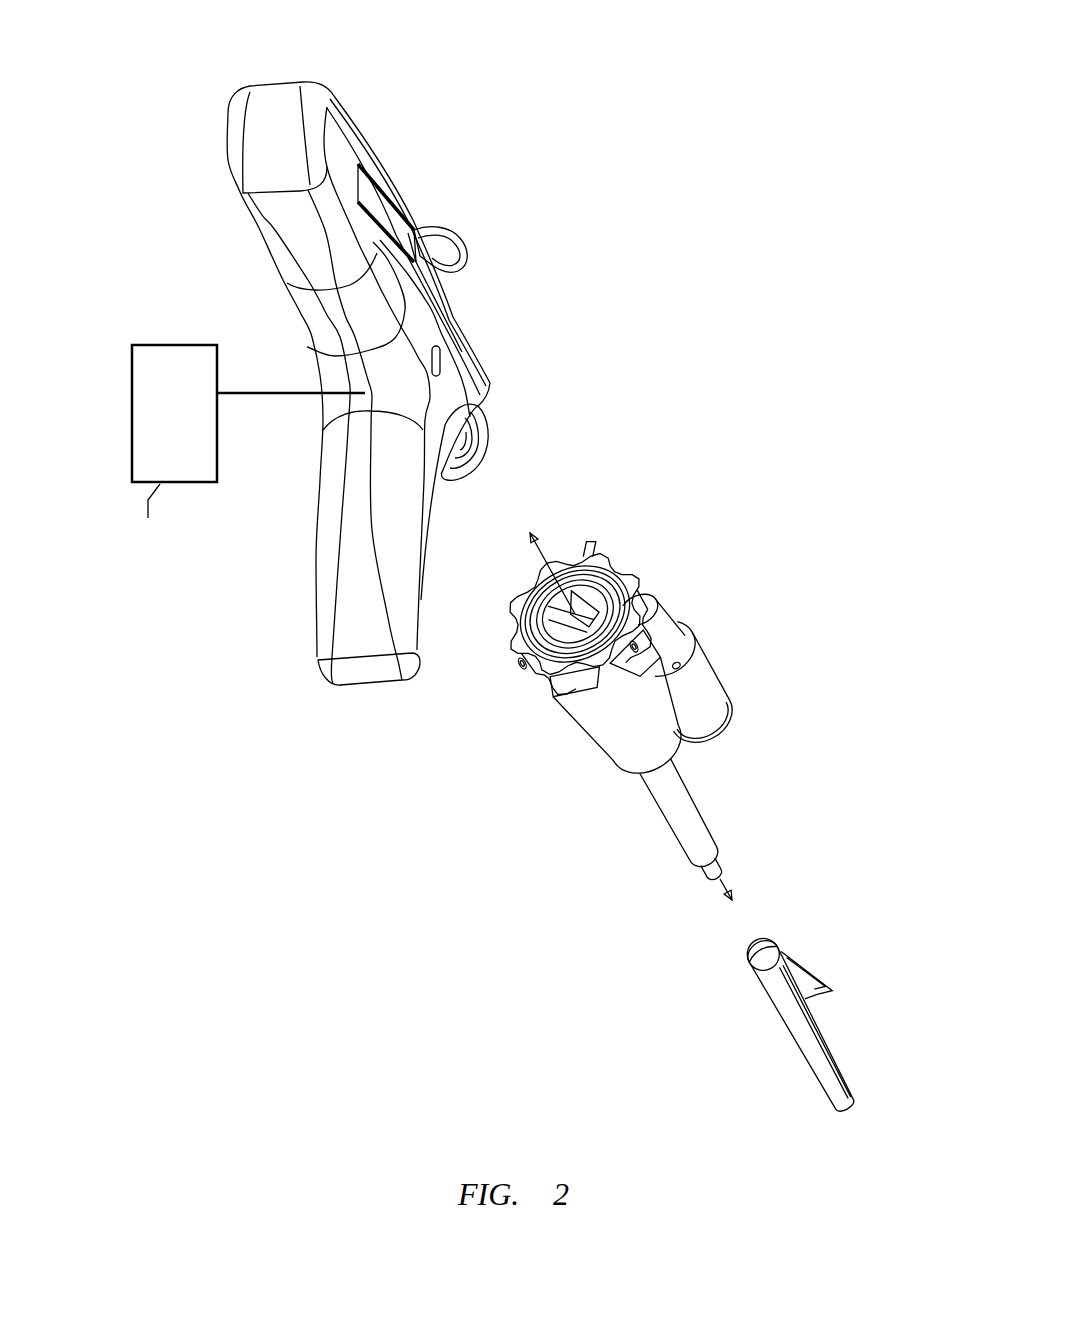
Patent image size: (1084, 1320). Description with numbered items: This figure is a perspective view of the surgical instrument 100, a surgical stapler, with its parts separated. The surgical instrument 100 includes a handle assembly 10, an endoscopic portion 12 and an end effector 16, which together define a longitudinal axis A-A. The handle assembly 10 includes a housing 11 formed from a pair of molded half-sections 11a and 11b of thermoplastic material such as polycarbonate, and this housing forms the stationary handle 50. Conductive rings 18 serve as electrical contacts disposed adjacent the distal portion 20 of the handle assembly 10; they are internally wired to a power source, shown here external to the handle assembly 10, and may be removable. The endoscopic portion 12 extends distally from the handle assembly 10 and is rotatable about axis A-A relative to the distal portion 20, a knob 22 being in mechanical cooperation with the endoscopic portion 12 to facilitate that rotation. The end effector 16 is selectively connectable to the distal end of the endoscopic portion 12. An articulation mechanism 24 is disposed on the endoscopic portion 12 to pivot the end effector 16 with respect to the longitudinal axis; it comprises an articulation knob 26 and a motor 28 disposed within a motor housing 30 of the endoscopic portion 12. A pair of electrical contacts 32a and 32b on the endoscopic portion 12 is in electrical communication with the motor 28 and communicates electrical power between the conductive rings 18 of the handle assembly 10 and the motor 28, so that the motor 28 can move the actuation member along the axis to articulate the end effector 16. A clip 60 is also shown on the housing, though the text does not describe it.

The handle assembly 10 is at (348, 394).
The housing 11 is at (382, 164).
The molded half-section 11a is at (328, 90).
The molded half-section 11b is at (250, 230).
The clip 60 is at (468, 258).
The conductive rings 18 is at (474, 450).
The distal portion 20 is at (487, 472).
The stationary handle 50 is at (352, 686).
The surgical instrument 100 is at (661, 737).
The articulation mechanism 24 is at (612, 531).
The articulation knob 26 is at (622, 553).
The motor 28 is at (703, 624).
The motor housing 30 is at (718, 668).
The electrical contact 32a is at (577, 605).
The electrical contact 32b is at (584, 611).
The knob 22 is at (552, 693).
The endoscopic portion 12 is at (730, 851).
The end effector 16 is at (793, 938).